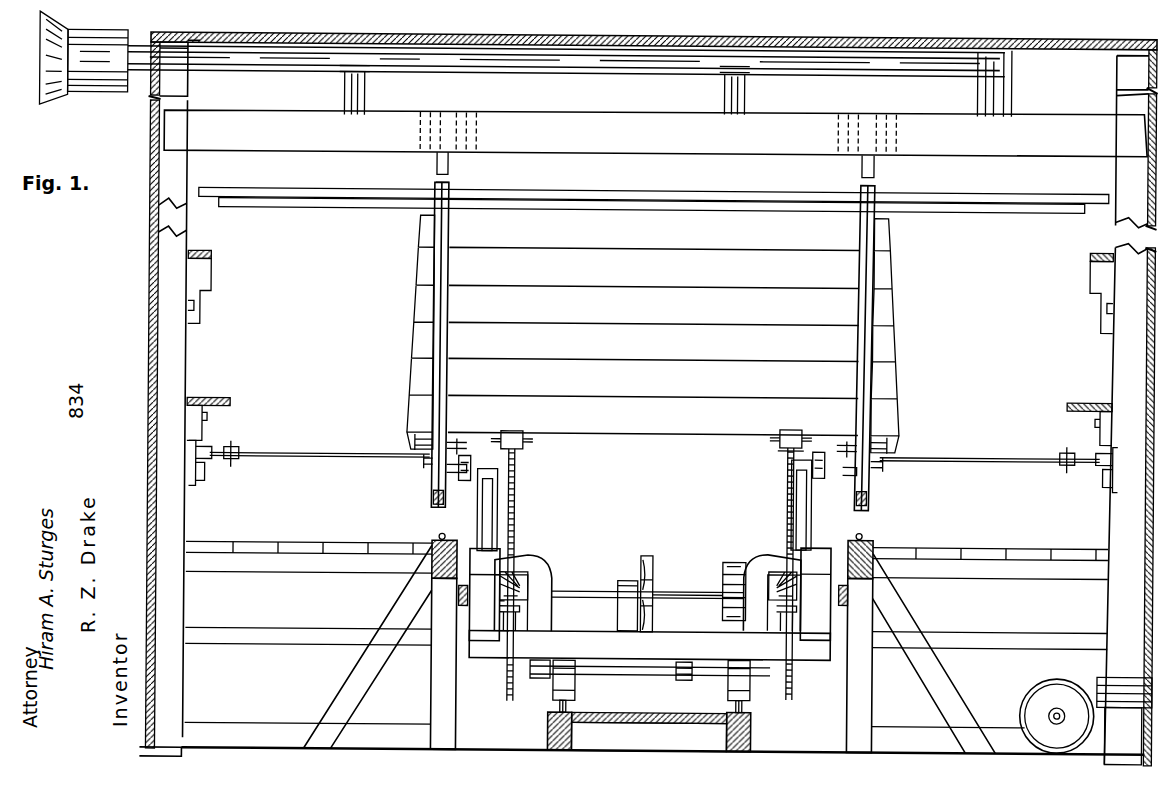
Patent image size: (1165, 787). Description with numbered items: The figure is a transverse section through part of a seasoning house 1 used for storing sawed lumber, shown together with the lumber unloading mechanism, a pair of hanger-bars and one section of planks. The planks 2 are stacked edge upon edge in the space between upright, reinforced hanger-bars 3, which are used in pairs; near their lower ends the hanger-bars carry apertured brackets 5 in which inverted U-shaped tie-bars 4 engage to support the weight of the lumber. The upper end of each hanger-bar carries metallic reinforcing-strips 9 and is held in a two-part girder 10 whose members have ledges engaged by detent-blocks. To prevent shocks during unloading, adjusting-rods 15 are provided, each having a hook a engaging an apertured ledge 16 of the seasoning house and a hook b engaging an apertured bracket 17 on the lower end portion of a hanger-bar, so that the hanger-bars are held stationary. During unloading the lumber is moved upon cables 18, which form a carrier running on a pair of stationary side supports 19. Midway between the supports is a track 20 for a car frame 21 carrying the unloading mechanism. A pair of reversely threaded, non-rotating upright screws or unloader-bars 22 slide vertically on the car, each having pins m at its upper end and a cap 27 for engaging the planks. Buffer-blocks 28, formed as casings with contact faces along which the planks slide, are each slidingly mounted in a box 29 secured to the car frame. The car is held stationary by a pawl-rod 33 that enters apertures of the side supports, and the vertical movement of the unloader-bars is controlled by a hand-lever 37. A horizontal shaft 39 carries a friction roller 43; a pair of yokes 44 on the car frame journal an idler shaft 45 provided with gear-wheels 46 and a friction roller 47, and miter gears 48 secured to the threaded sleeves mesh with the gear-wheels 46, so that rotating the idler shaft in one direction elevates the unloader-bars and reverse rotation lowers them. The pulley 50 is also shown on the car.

The seasoning house 1 is at (162, 238).
The planks 2 is at (436, 240).
The hanger-bars 3 is at (452, 188).
The tie-bars 4 is at (412, 456).
The apertured brackets 5 is at (410, 446).
The metallic reinforcing-strips 9 is at (455, 236).
The two-part girder 10 is at (480, 128).
The adjusting-rods 15 is at (292, 455).
The apertured ledge 16 is at (198, 480).
The apertured bracket 17 is at (428, 472).
The cables 18 is at (432, 532).
The side supports 19 is at (444, 578).
The track 20 is at (578, 700).
The car frame 21 is at (630, 656).
The unloader-bars 22 is at (522, 532).
The cap 27 is at (520, 430).
The buffer-blocks 28 is at (502, 508).
The box 29 is at (472, 546).
The pawl-rod 33 is at (466, 598).
The hand-lever 37 is at (694, 678).
The horizontal shaft 39 is at (676, 592).
The friction roller 43 is at (727, 581).
The yokes 44 is at (539, 566).
The idler shaft 45 is at (568, 592).
The gear-wheels 46 is at (529, 603).
The friction roller 47 is at (729, 562).
The miter gears 48 is at (534, 568).
The pulley 50 is at (658, 561).
The hook a is at (215, 470).
The hook b is at (420, 470).
The pins m is at (778, 444).